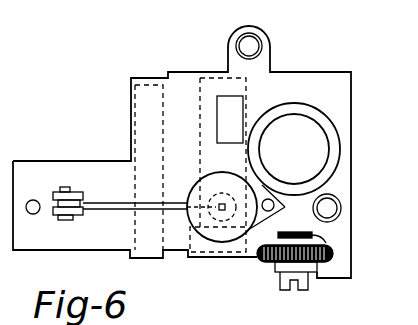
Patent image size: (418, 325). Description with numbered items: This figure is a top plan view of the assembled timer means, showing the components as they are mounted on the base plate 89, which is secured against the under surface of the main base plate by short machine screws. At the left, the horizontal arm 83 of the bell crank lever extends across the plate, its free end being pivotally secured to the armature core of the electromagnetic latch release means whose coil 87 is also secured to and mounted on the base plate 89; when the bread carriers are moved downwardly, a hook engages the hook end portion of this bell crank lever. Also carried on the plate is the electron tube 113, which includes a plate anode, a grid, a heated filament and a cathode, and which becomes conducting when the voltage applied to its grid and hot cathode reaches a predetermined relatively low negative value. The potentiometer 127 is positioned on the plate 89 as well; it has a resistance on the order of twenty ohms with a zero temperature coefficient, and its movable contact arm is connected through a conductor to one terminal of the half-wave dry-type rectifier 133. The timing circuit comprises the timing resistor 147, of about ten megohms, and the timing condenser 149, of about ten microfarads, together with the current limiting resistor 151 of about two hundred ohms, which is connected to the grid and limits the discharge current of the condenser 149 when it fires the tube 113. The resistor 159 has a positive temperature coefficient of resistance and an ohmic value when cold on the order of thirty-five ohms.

The horizontal arm 83 is at (118, 210).
The coil 87 is at (215, 238).
The base plate 89 is at (351, 160).
The electron tube 113 is at (333, 127).
The potentiometer 127 is at (265, 263).
The half-wave dry-type rectifier 133 is at (238, 112).
The timing resistor 147 is at (143, 84).
The timing condenser 149 is at (197, 85).
The current limiting resistor 151 is at (341, 204).
The resistor 159 is at (262, 45).